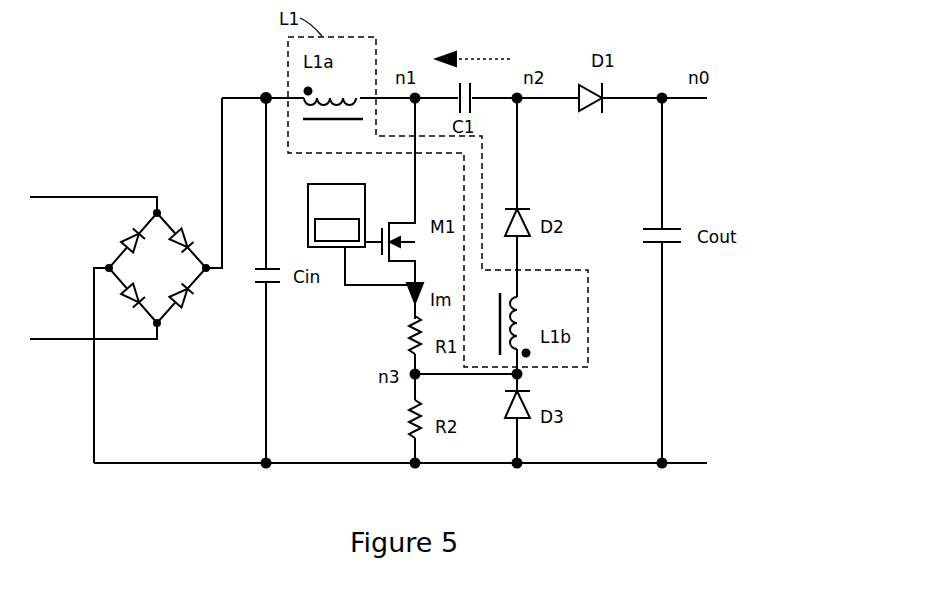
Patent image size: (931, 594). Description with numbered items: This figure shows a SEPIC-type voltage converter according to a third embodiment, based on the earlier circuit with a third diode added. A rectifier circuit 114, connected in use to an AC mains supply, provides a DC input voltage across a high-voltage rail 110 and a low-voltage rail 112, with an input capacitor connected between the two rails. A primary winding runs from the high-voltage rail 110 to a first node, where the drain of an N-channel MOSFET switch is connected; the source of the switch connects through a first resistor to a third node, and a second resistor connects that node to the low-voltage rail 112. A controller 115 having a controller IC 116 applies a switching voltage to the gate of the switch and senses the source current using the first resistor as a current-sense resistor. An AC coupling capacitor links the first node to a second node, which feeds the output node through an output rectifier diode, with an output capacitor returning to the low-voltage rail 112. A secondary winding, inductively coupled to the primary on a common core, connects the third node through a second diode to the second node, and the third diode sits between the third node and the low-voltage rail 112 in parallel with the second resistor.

The high-voltage rail 110 is at (244, 84).
The low-voltage rail 112 is at (221, 485).
The rectifier circuit 114 is at (182, 193).
The controller 115 is at (323, 211).
The controller IC 116 is at (323, 240).